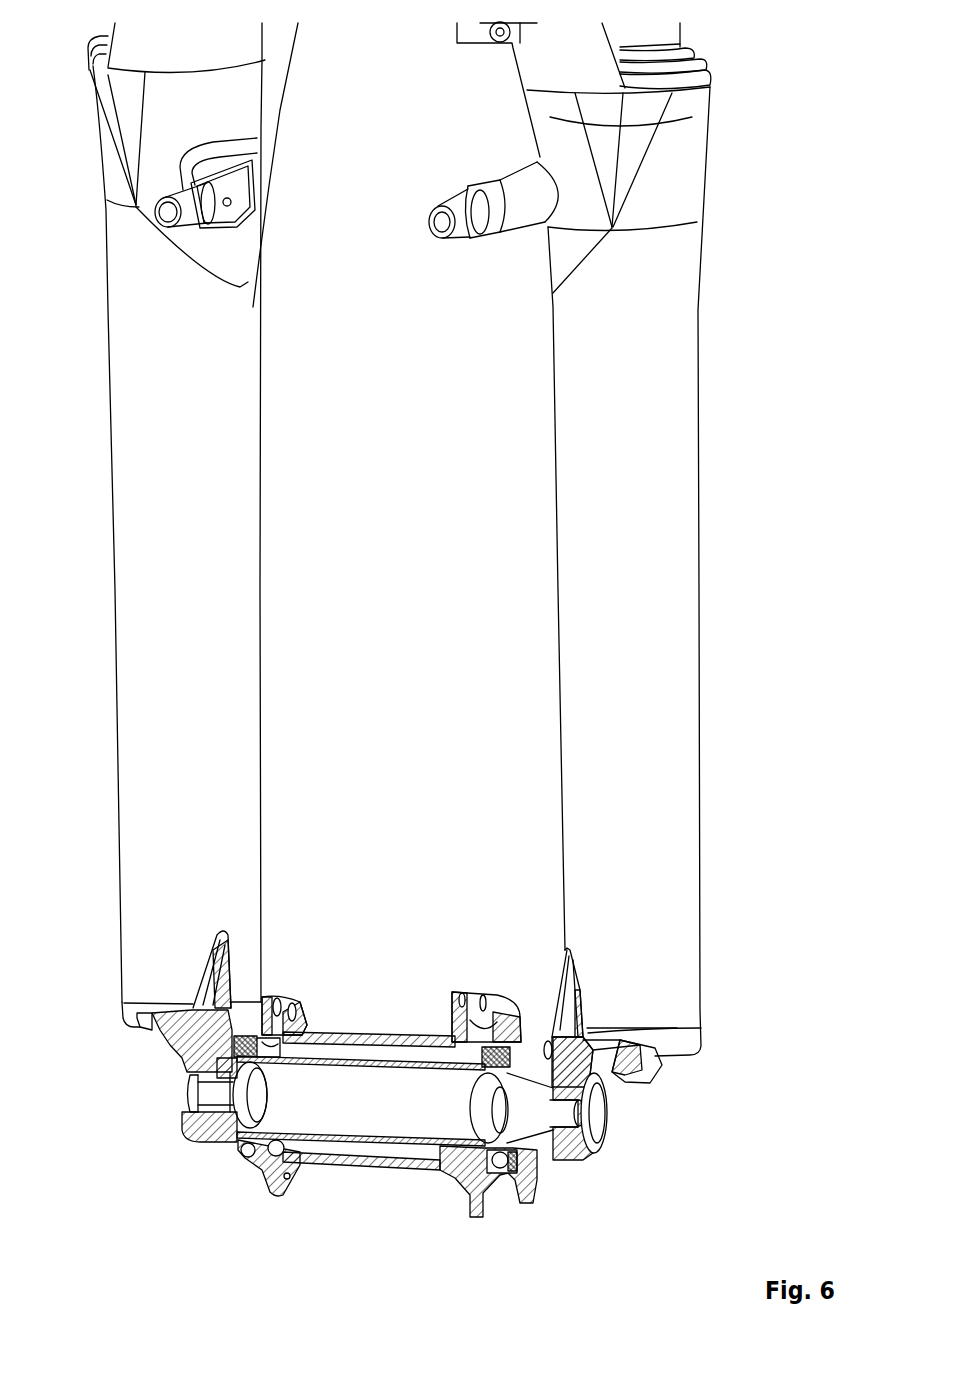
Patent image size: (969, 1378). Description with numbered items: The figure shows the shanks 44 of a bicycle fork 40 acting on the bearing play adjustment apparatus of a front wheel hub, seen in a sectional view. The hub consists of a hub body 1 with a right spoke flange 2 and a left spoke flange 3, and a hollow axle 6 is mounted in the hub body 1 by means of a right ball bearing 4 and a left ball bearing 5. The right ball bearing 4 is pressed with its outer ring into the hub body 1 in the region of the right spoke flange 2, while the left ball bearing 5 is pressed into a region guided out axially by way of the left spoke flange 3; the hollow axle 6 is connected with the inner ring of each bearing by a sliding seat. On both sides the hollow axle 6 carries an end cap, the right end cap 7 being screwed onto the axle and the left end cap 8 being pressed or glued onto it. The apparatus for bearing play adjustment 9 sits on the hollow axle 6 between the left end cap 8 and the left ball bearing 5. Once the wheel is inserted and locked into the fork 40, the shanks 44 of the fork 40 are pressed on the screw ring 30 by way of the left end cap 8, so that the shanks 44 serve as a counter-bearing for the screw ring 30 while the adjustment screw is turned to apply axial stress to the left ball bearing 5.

The hub body 1 is at (360, 1153).
The right spoke flange 2 is at (472, 1205).
The left spoke flange 3 is at (265, 1178).
The right ball bearing 4 is at (510, 1170).
The left ball bearing 5 is at (288, 1173).
The hollow axle 6 is at (403, 1147).
The right end cap 7 is at (558, 1160).
The left end cap 8 is at (228, 1140).
The apparatus for bearing play adjustment 9 is at (245, 1156).
The screw ring 30 is at (243, 1036).
The fork 40 is at (137, 915).
The shanks 44 is at (162, 1058).